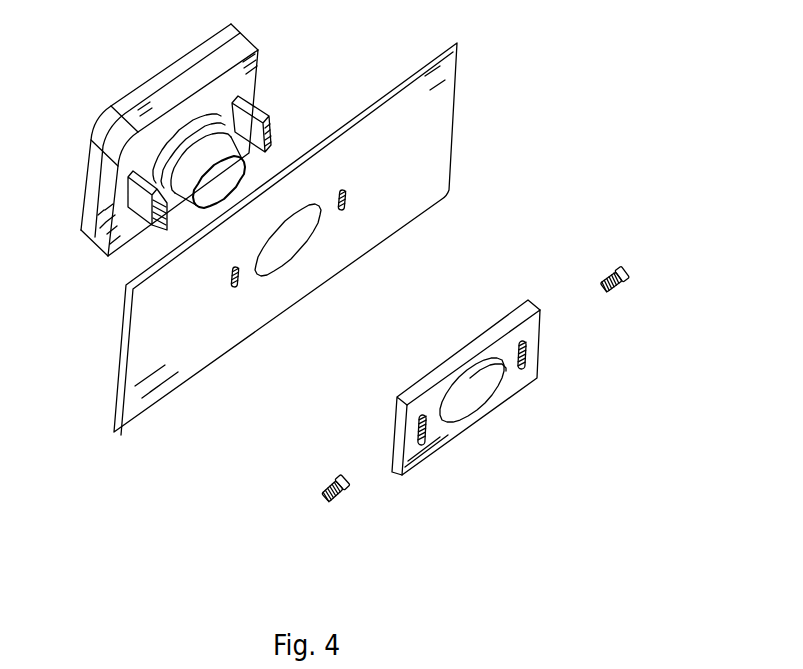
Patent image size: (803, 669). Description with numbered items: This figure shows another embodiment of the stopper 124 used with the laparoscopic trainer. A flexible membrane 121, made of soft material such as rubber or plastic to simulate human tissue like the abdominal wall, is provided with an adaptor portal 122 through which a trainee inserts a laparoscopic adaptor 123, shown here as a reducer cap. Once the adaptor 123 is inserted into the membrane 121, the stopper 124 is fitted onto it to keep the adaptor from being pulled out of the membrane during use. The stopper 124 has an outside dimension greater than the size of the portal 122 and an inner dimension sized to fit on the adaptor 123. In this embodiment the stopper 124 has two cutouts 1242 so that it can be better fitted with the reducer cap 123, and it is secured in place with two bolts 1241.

The flexible membrane 121 is at (410, 155).
The adaptor portal 122 is at (282, 237).
The laparoscopic adaptor 123 is at (150, 85).
The stopper 124 is at (507, 387).
The bolt 1241 is at (615, 280).
The cutout 1242 is at (525, 352).